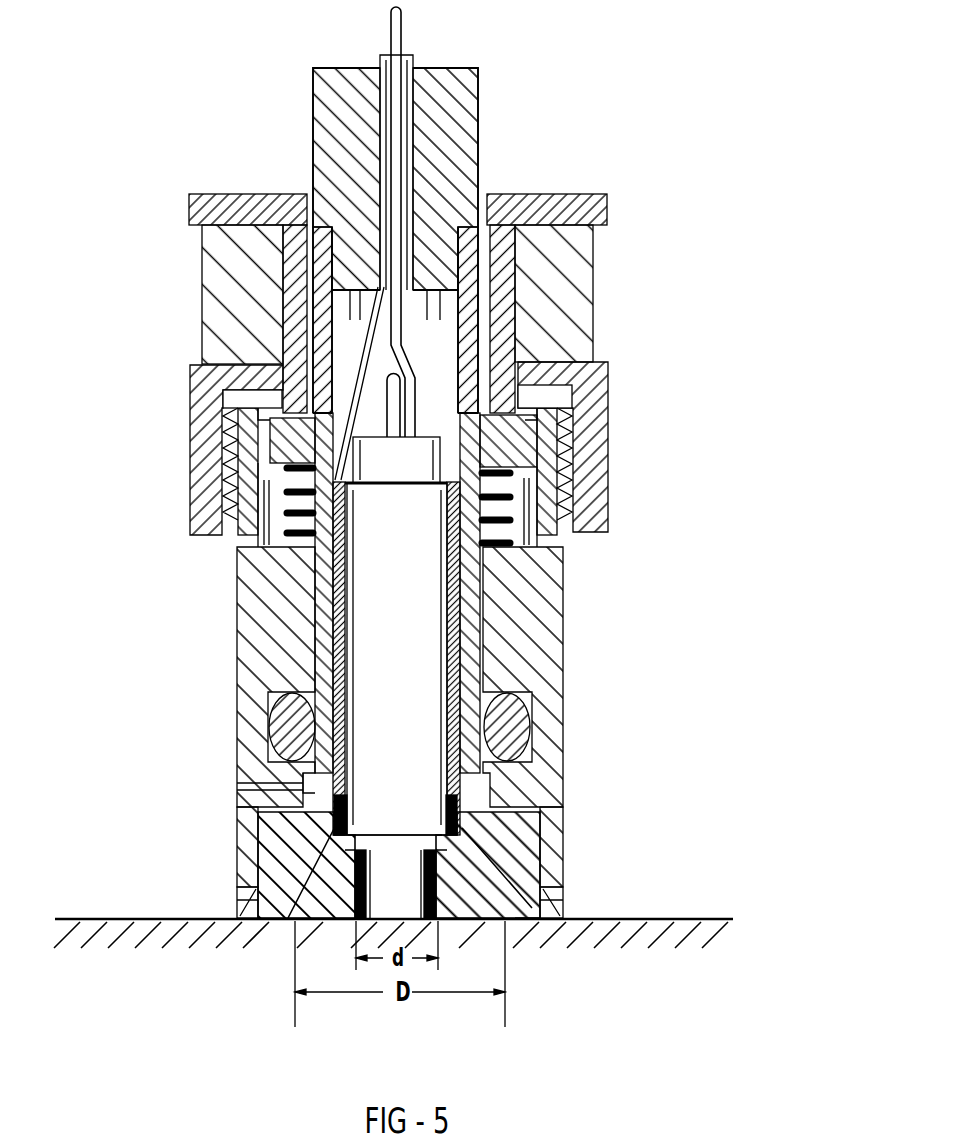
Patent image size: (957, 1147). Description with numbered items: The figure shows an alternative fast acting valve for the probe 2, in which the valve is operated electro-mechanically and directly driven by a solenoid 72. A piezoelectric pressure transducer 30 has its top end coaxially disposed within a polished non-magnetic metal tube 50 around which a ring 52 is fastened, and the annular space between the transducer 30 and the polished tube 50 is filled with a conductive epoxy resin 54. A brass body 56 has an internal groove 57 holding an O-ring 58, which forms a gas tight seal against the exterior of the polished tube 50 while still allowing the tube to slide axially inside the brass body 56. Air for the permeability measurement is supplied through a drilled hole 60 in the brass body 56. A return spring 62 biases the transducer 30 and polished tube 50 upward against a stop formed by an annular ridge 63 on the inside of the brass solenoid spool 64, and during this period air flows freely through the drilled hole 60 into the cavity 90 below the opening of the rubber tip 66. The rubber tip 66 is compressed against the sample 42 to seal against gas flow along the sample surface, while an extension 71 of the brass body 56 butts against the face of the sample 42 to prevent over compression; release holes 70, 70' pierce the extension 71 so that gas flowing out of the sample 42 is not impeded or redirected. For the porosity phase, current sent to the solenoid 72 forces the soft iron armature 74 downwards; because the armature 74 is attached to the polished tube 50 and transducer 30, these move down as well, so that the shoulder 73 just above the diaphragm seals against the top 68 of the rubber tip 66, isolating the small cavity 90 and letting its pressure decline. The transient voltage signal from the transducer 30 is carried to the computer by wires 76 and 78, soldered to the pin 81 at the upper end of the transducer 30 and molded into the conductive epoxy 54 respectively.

The probe 2 is at (168, 98).
The soft iron armature 74 is at (480, 138).
The solenoid 72 is at (596, 264).
The wire 76 is at (415, 365).
The wire 78 is at (360, 378).
The pin 81 is at (390, 412).
The annular ridge 63 is at (235, 398).
The brass solenoid spool 64 is at (610, 382).
The ring 52 is at (507, 440).
The return spring 62 is at (507, 497).
The piezoelectric pressure transducer 30 is at (380, 600).
The polished non-magnetic metal tube 50 is at (470, 623).
The conductive epoxy resin 54 is at (453, 665).
The brass body 56 is at (560, 577).
The internal groove 57 is at (263, 703).
The O-ring 58 is at (515, 732).
The drilled hole 60 is at (233, 782).
The rubber tip 66 is at (513, 845).
The top of rubber tip 68 is at (292, 923).
The extension 71 is at (563, 913).
The cavity 90 is at (427, 910).
The shoulder 73 is at (530, 923).
The release hole 70' is at (181, 865).
The release hole 70 is at (642, 860).
The sample 42 is at (733, 918).